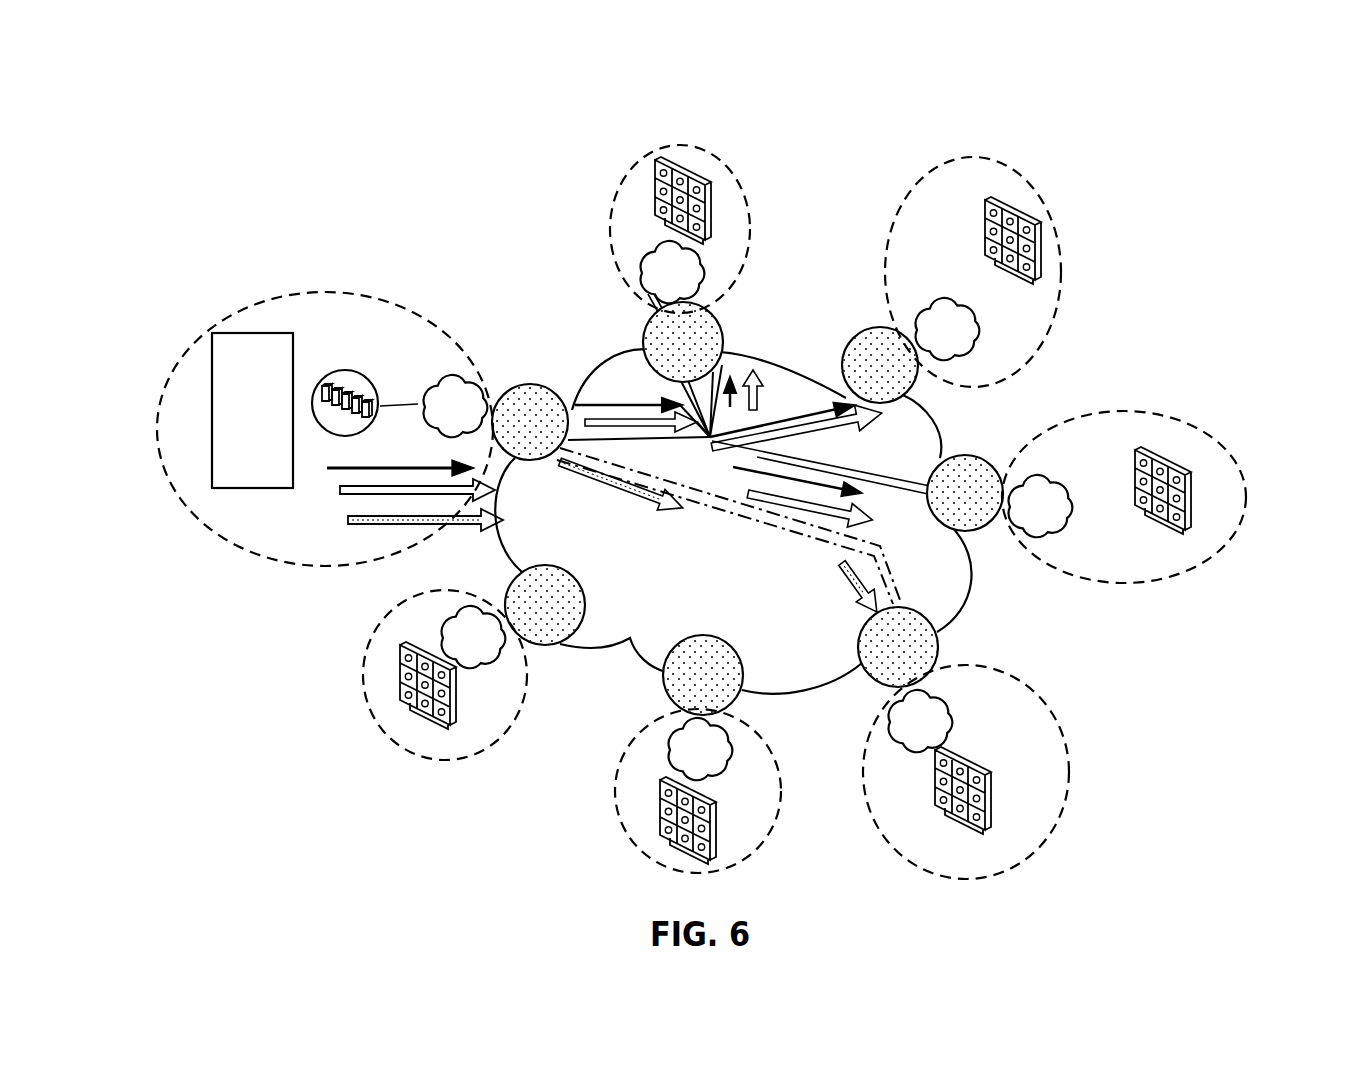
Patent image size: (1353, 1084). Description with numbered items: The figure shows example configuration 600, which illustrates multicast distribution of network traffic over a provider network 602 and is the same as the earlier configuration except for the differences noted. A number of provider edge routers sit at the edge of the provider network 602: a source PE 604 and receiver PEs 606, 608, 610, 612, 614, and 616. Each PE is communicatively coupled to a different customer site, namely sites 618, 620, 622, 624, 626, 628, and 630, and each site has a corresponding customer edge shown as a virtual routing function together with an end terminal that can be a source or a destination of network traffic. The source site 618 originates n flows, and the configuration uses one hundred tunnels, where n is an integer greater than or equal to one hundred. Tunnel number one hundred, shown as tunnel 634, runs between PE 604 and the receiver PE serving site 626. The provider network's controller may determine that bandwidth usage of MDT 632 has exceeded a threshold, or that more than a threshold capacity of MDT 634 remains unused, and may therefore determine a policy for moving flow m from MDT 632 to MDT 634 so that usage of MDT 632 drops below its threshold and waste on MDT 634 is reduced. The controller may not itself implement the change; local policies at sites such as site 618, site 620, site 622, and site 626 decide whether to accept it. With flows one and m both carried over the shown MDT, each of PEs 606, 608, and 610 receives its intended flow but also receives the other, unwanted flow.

The example configuration 600 is at (1245, 139).
The provider network 602 is at (746, 589).
The source PE 604 is at (523, 383).
The receiver PE 606 is at (645, 335).
The receiver PE 608 is at (870, 328).
The receiver PE 610 is at (937, 462).
The receiver PE 612 is at (938, 640).
The receiver PE 614 is at (664, 686).
The receiver PE 616 is at (576, 567).
The source site 618 is at (158, 425).
The customer site 620 is at (612, 235).
The customer site 622 is at (1061, 208).
The customer site 624 is at (1240, 468).
The customer site 626 is at (1068, 787).
The customer site 628 is at (615, 805).
The customer site 630 is at (365, 672).
The MDT 632 is at (806, 394).
The tunnel (MDT) 634 is at (833, 545).